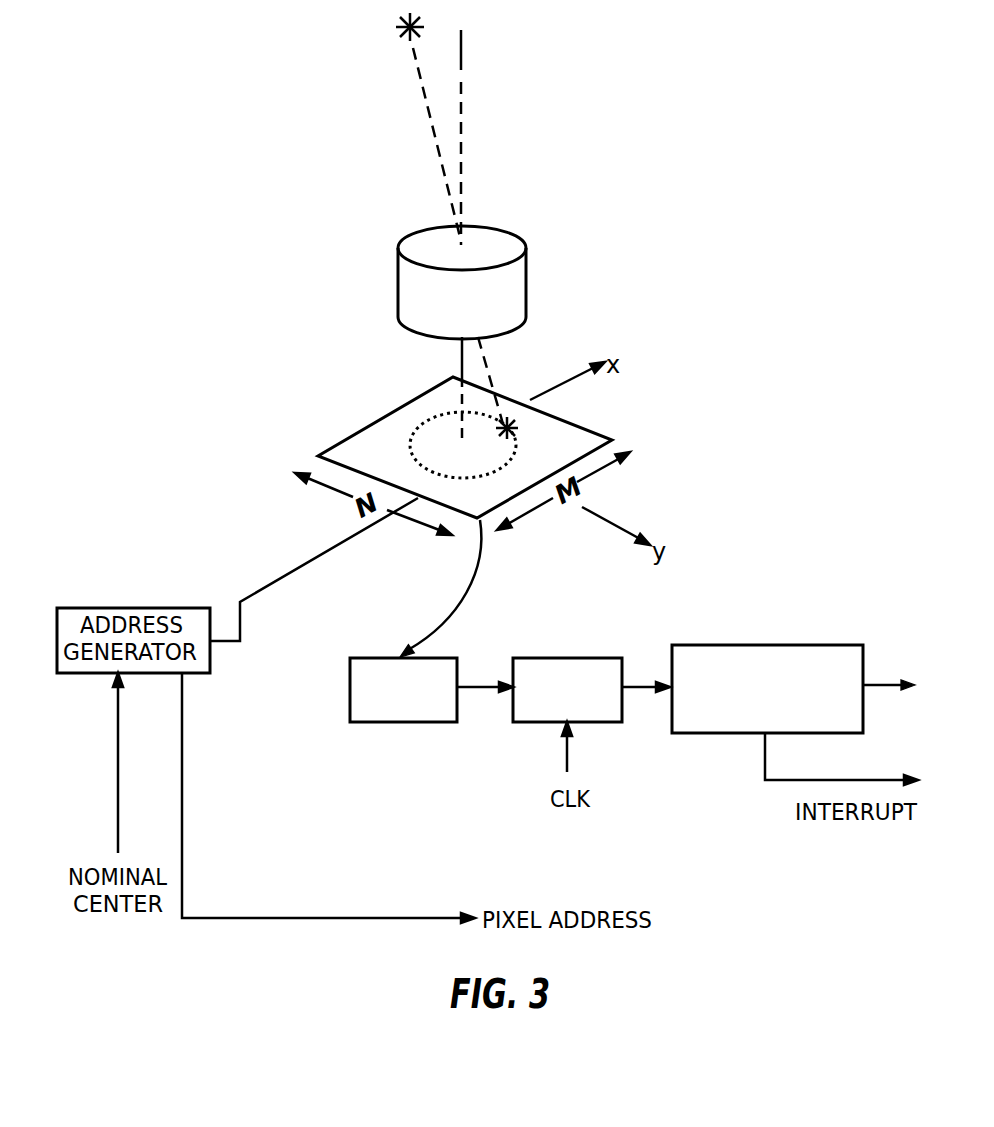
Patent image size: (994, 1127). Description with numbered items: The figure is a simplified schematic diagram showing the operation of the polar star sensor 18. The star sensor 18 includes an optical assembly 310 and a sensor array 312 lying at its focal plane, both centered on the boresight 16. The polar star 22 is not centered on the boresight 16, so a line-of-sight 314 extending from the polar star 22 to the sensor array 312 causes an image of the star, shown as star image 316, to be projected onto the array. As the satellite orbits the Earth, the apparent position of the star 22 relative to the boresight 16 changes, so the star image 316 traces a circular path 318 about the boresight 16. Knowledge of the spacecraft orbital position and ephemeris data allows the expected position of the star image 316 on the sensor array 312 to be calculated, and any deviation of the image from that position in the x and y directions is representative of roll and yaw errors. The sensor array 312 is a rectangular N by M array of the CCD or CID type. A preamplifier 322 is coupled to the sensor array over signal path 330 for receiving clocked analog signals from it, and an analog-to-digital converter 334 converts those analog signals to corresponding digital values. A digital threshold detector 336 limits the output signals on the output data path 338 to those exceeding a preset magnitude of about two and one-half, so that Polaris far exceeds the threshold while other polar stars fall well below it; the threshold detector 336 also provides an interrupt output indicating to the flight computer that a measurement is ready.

The polar star 22 is at (398, 30).
The boresight 16 is at (461, 95).
The line-of-sight 314 is at (432, 120).
The optical assembly 310 is at (527, 287).
The sensor array 312 is at (582, 428).
The star image 316 is at (511, 429).
The circular path 318 is at (424, 422).
The star sensor 18 is at (801, 433).
The detector output signal line 330 is at (462, 594).
The preamplifier 322 is at (350, 682).
The analog-to-digital converter 334 is at (582, 658).
The digital threshold detector 336 is at (760, 645).
The output data path 338 is at (880, 680).